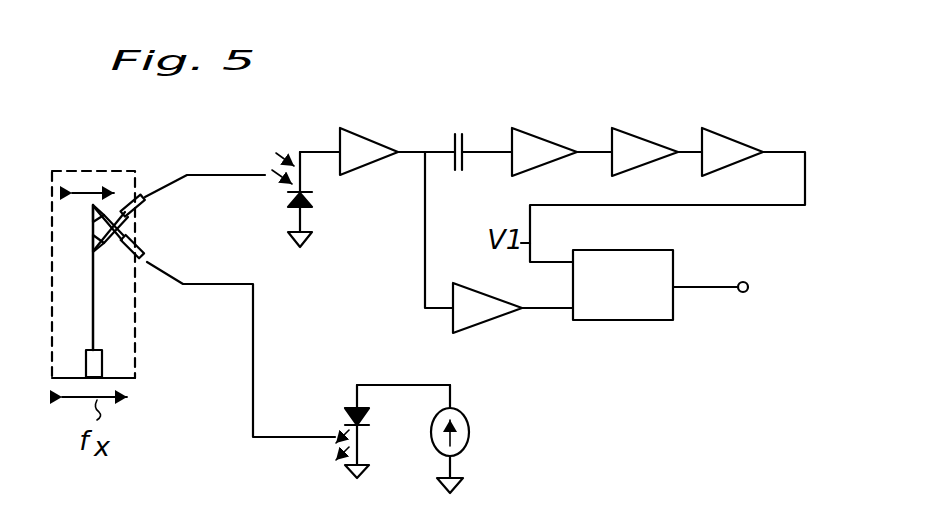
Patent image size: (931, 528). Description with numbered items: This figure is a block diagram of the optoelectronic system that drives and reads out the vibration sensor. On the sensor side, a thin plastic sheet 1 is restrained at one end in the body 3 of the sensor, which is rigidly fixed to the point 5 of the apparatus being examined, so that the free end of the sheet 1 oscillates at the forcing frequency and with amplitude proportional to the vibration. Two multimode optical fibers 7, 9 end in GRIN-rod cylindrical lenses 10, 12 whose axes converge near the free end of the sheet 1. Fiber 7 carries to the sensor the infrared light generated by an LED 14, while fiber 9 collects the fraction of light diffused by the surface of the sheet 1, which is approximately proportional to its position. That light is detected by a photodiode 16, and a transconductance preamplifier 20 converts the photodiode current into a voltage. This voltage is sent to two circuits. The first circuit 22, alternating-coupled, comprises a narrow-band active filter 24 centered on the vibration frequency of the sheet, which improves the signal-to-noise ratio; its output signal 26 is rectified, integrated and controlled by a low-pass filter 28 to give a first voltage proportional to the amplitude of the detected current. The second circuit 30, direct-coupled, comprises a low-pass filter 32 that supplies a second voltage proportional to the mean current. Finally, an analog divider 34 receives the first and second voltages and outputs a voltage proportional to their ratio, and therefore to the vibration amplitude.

The thin sheet 1 is at (93, 265).
The body of the sensor 3 is at (50, 299).
The point of the apparatus 5 is at (63, 377).
The multimode optical fiber 7 is at (183, 286).
The multimode optical fiber 9 is at (187, 176).
The cylindrical lens 10 is at (140, 262).
The cylindrical lens 12 is at (144, 206).
The LED 14 is at (376, 442).
The photodiode 16 is at (311, 222).
The transconductance preamplifier 20 is at (370, 160).
The first circuit 22 is at (807, 192).
The narrow-band active filter 24 is at (518, 175).
The output signal 26 is at (640, 143).
The low-pass filter 28 is at (732, 145).
The second circuit 30 is at (421, 242).
The low-pass filter 32 is at (473, 311).
The analog divider 34 is at (668, 323).